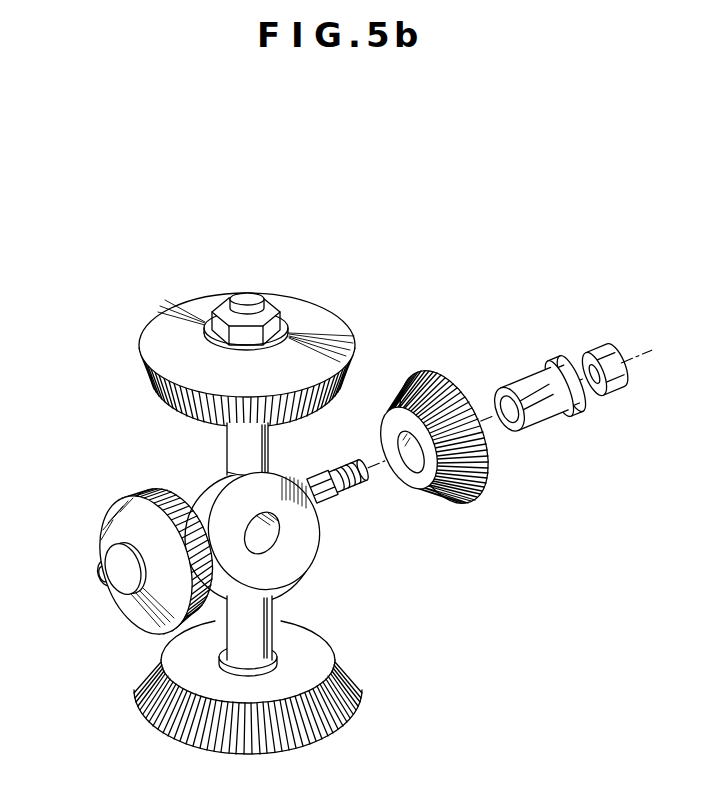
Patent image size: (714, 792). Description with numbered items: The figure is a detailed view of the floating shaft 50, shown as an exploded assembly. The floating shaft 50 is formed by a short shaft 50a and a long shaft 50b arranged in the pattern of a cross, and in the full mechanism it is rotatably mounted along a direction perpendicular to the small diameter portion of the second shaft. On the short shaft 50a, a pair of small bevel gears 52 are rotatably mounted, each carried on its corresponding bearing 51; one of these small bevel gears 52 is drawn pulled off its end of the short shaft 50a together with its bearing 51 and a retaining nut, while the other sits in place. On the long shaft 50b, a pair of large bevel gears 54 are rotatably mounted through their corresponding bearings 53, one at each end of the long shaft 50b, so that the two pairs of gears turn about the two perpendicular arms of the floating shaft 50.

The floating shaft 50 is at (308, 563).
The short shaft 50a is at (318, 493).
The long shaft 50b is at (228, 446).
The bearing 51 is at (531, 429).
The small bevel gear 52 is at (440, 504).
The bearing 53 is at (217, 321).
The large bevel gear 54 is at (353, 340).